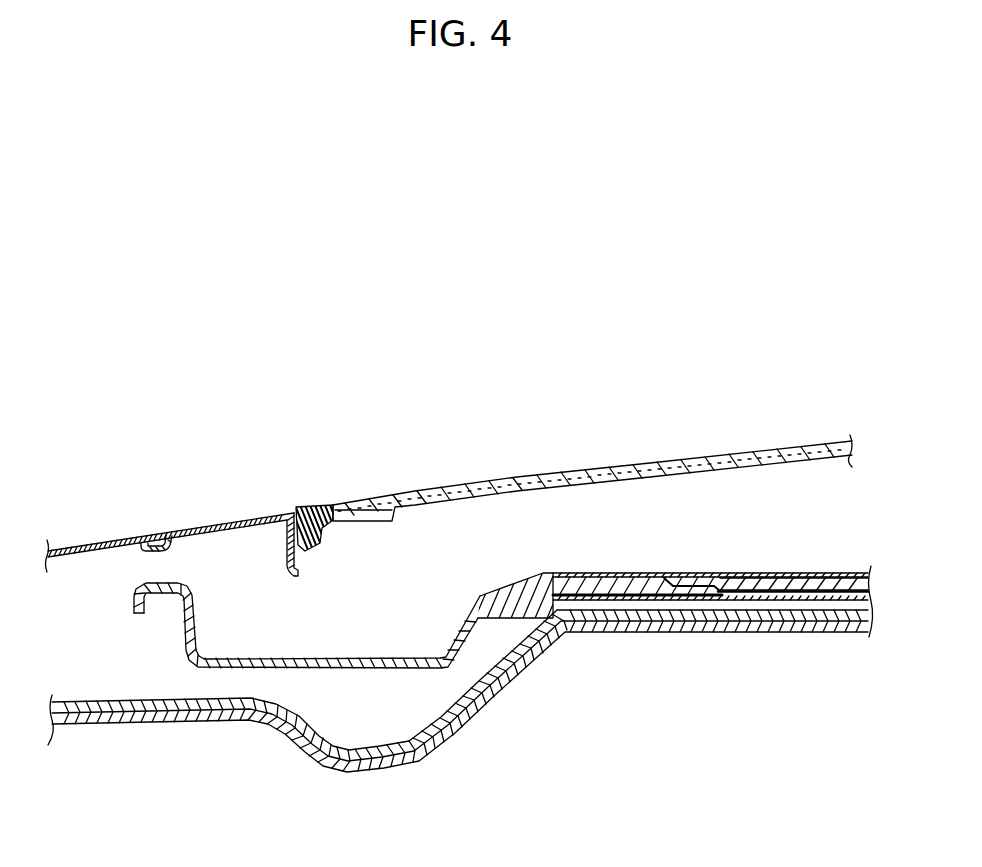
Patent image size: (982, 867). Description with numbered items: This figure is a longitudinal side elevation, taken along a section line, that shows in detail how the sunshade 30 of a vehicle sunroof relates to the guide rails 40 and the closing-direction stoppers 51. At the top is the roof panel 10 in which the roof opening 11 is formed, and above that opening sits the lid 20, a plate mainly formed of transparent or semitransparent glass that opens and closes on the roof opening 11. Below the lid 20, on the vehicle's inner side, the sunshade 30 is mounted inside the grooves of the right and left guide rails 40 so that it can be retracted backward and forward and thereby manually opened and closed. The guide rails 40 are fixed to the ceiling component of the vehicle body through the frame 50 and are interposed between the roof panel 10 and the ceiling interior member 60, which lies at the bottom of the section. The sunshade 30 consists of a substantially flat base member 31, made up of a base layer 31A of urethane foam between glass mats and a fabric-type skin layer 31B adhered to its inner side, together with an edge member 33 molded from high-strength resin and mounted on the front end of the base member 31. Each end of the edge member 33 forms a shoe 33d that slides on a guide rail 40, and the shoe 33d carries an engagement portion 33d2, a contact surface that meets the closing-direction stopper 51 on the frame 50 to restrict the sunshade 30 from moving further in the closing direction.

The roof panel 10 is at (158, 533).
The roof opening 11 is at (313, 507).
The lid 20 is at (516, 476).
The sunshade 30 is at (693, 582).
The base member 31 is at (843, 582).
The base layer 31A is at (756, 584).
The skin layer 31B is at (747, 600).
The edge member 33 is at (630, 596).
The shoe 33d is at (601, 582).
The engagement portion 33d2 is at (560, 578).
The guide rail 40 is at (797, 577).
The frame 50 is at (342, 668).
The closing-direction stopper 51 is at (533, 585).
The ceiling interior member 60 is at (405, 766).